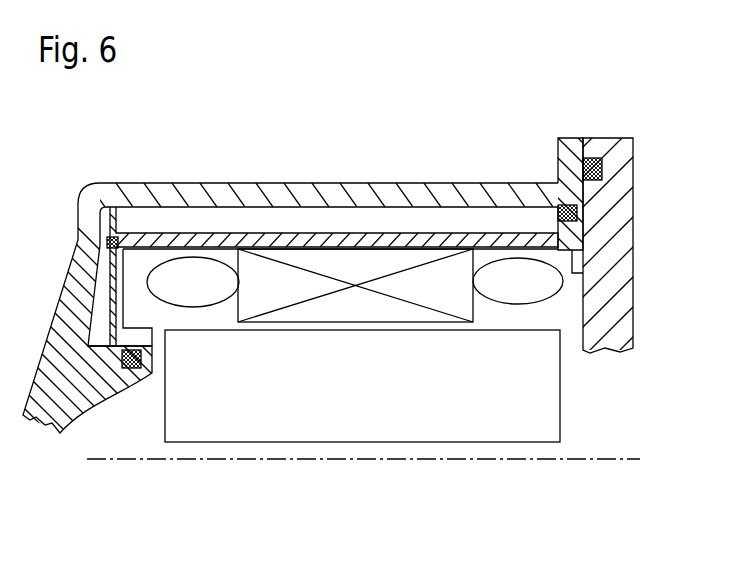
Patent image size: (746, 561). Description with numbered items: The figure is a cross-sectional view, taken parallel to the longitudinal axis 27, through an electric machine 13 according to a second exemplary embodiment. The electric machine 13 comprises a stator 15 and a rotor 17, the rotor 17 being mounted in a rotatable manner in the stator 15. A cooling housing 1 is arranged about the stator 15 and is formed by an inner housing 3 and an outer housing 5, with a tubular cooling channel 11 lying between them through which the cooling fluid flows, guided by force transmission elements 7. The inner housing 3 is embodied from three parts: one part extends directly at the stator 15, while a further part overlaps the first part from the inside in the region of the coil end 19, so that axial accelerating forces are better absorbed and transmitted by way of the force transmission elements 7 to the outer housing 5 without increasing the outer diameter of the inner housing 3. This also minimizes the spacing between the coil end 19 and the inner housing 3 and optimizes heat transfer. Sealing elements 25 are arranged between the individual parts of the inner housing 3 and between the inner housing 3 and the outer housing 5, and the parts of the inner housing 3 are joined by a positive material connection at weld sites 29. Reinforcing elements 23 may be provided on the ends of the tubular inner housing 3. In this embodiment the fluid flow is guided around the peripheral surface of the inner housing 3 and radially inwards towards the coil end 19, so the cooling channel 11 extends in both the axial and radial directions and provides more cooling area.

The cooling housing 1 is at (388, 158).
The inner housing 3 is at (348, 243).
The outer housing 5 is at (216, 196).
The force transmission elements 7 is at (422, 223).
The cooling channel 11 is at (100, 292).
The electric machine 13 is at (68, 180).
The stator 15 is at (440, 305).
The rotor 17 is at (490, 365).
The coil ends 19 is at (175, 288).
The reinforcing elements 23 is at (182, 232).
The sealing elements 25 is at (128, 362).
The longitudinal axis 27 is at (172, 460).
The weld sites 29 is at (108, 241).